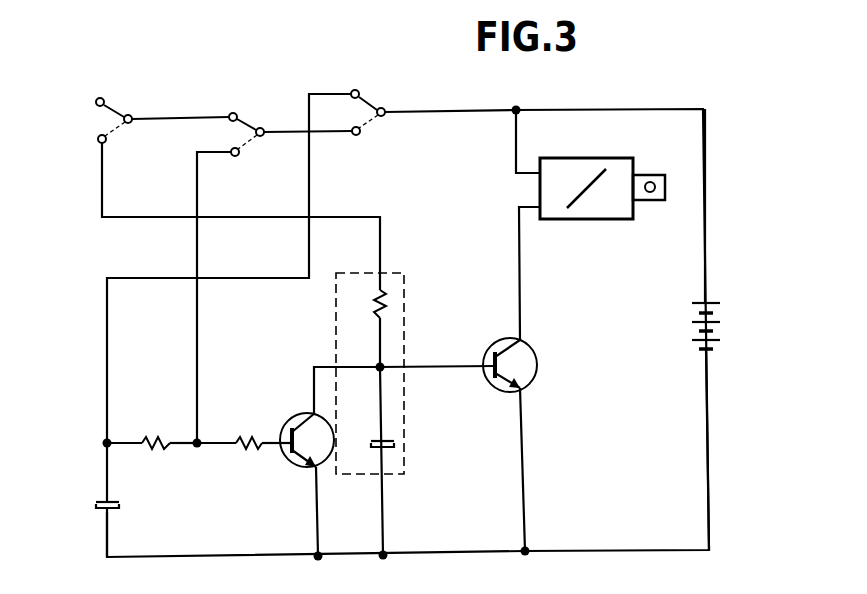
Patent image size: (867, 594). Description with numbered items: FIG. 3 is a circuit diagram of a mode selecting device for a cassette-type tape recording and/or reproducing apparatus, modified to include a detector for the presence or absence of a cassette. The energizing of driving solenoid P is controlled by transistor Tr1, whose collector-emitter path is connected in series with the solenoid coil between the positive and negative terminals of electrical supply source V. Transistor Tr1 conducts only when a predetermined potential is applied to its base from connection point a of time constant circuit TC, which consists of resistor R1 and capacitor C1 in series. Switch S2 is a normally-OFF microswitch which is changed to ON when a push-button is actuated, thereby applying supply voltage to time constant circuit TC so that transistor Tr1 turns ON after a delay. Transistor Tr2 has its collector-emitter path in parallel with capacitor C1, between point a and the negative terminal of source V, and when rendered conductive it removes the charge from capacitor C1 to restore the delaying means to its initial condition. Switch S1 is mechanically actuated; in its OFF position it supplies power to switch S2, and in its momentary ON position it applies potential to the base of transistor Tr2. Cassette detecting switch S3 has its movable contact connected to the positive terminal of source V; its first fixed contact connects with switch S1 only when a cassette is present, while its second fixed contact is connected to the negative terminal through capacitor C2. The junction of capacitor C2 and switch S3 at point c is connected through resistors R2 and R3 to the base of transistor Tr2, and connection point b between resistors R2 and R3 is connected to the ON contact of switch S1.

The switch S1 is at (276, 133).
The second switch means S2 is at (148, 116).
The cassette detecting switch S3 is at (364, 112).
The driving solenoid P is at (590, 221).
The electrical supply source V is at (686, 319).
The time constant circuit TC is at (357, 273).
The resistor R1 is at (370, 305).
The resistor R2 is at (159, 431).
The resistor R3 is at (251, 431).
The capacitor C1 is at (372, 445).
The capacitor C2 is at (125, 525).
The transistor Tr1 is at (537, 368).
The transistor Tr2 is at (281, 448).
The connection point a is at (372, 356).
The connection point b is at (202, 460).
The point c is at (95, 444).